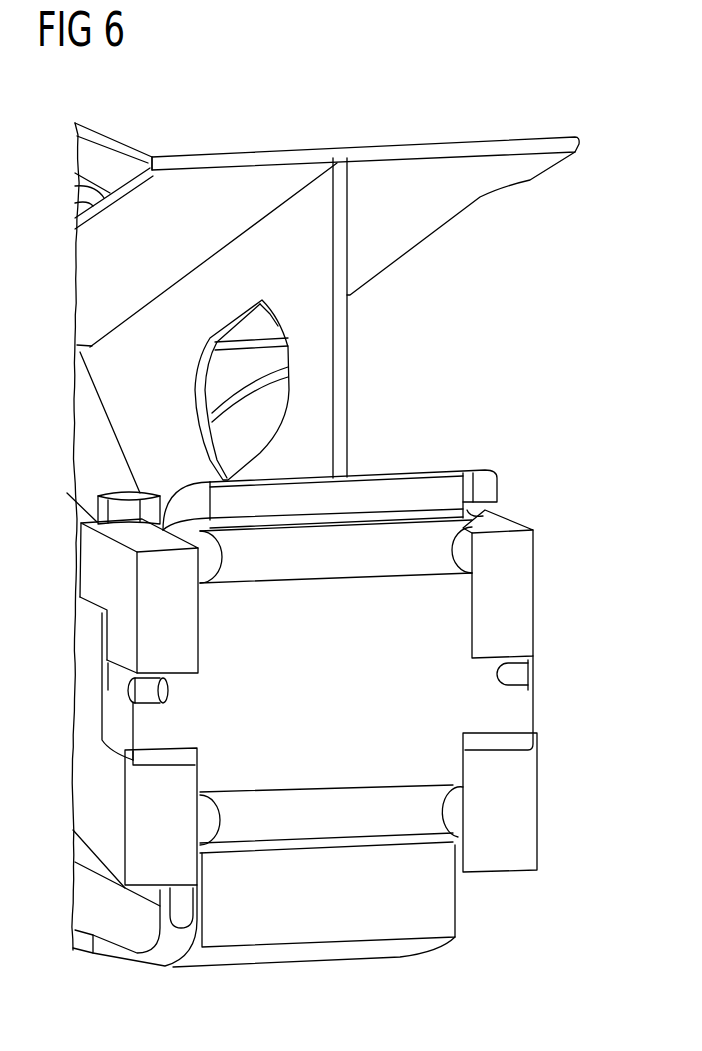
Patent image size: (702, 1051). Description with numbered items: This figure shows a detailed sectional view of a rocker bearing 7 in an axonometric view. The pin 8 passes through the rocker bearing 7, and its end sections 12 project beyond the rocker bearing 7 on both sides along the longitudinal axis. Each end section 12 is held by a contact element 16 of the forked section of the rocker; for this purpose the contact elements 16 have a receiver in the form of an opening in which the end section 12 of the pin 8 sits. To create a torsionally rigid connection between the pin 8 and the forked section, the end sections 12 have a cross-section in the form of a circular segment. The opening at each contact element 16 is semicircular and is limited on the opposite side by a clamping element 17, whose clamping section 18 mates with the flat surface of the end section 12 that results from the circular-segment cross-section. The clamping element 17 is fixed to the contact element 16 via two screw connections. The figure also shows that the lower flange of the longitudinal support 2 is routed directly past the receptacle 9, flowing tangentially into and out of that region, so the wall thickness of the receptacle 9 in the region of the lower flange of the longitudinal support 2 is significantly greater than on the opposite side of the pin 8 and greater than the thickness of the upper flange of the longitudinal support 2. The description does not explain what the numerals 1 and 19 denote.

The vehicle body / frame rail 1 is at (365, 188).
The longitudinal support 2 is at (413, 182).
The rocker bearing 7 is at (535, 924).
The pin 8 is at (332, 717).
The receptacle 9 is at (404, 488).
The end section 12 is at (150, 728).
The contact element 16 is at (143, 853).
The clamping element 17 is at (96, 566).
The clamping section 18 is at (167, 668).
The lower shaft 19 is at (270, 830).